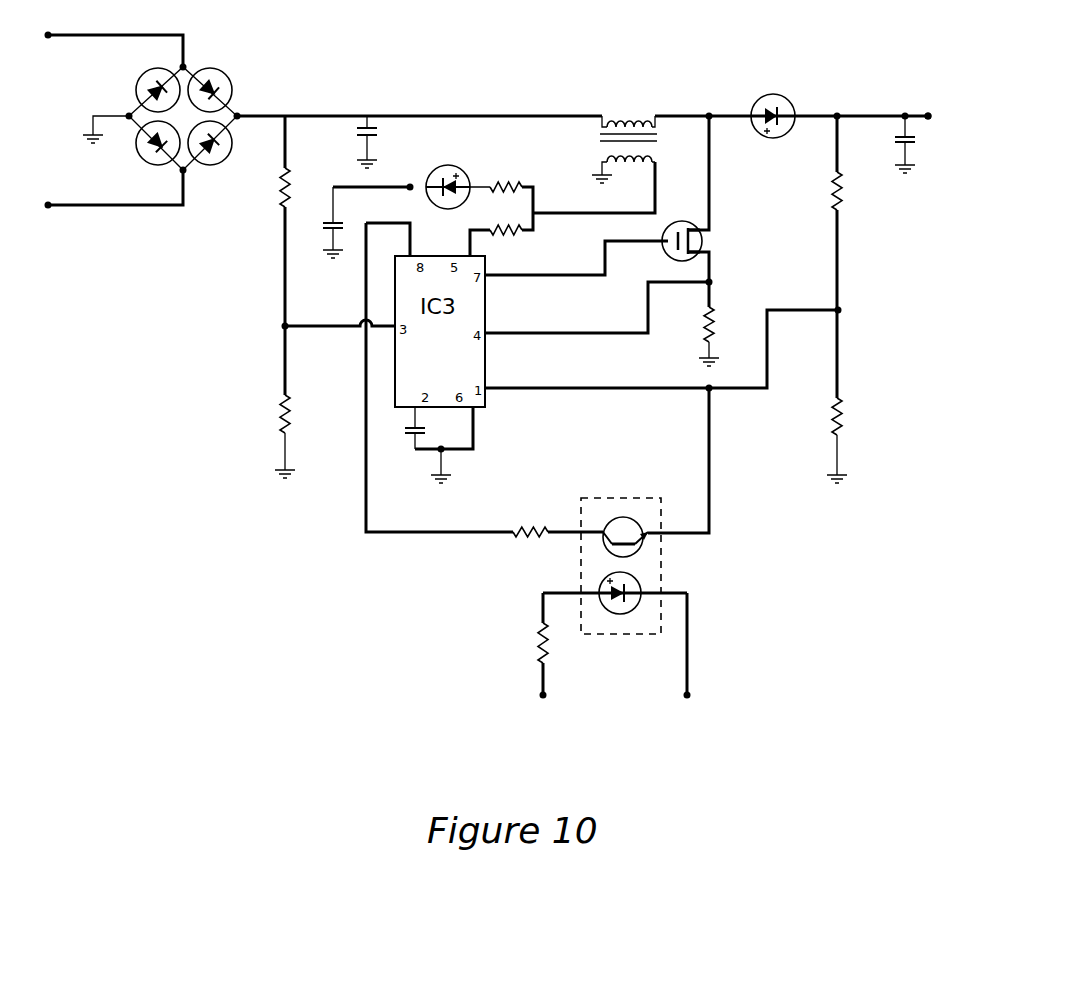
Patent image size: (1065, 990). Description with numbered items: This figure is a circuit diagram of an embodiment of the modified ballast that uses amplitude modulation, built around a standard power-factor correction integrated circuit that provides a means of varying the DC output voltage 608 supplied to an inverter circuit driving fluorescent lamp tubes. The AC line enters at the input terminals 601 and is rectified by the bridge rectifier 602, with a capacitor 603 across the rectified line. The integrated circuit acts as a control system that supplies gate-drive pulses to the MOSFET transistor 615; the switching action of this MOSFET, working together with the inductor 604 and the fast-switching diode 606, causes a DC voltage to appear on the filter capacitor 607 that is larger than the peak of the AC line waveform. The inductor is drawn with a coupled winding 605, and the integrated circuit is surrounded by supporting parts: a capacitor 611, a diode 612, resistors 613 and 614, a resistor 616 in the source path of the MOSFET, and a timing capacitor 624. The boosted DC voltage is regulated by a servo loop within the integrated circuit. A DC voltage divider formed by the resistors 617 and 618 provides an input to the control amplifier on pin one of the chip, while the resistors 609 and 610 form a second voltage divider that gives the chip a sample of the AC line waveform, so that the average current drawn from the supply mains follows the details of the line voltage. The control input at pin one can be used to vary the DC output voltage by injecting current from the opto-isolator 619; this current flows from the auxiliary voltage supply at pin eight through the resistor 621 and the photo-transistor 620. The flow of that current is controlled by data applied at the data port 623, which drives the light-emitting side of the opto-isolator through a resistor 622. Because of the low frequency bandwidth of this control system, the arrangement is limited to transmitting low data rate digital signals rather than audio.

The AC input terminals 601 is at (116, 106).
The bridge rectifier 602 is at (234, 46).
The filter capacitor 603 is at (372, 136).
The inductor 604 is at (627, 110).
The transformer secondary winding 605 is at (626, 167).
The fast-switching diode 606 is at (790, 94).
The filter capacitor 607 is at (894, 138).
The DC output voltage 608 is at (926, 106).
The resistor 609 is at (280, 190).
The resistor 610 is at (280, 402).
The capacitor 611 is at (333, 232).
The diode 612 is at (463, 172).
The resistor 613 is at (503, 180).
The resistor 614 is at (510, 238).
The MOSFET transistor 615 is at (704, 246).
The sense resistor 616 is at (714, 311).
The resistor 617 is at (846, 190).
The resistor 618 is at (843, 409).
The opto-isolator 619 is at (664, 568).
The photo-transistor 620 is at (640, 521).
The resistor 621 is at (516, 526).
The resistor 622 is at (540, 641).
The data port 623 is at (545, 697).
The timing capacitor 624 is at (410, 437).